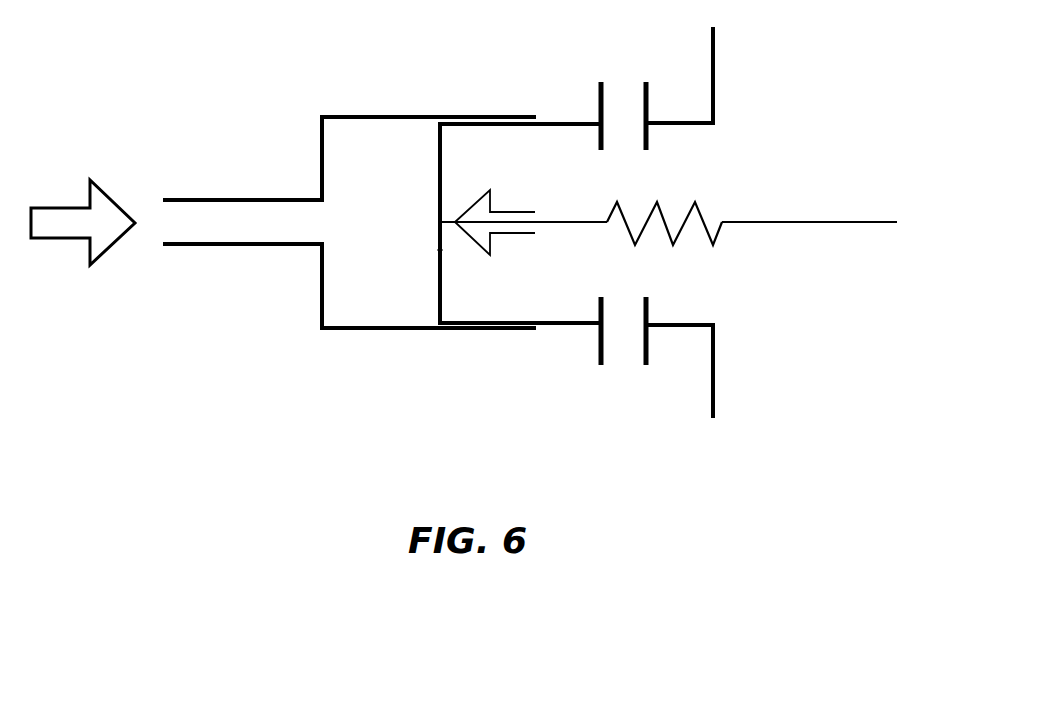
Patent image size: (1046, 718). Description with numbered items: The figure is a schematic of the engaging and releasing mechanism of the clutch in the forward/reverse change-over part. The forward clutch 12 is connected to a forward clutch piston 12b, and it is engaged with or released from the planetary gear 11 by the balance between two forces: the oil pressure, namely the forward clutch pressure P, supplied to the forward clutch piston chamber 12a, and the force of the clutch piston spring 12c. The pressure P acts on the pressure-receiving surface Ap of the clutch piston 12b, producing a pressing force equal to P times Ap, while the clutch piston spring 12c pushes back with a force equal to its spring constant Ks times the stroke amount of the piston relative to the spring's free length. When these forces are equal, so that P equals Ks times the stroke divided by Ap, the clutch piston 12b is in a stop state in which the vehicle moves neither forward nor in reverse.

The forward clutch pressure P is at (70, 208).
The forward clutch piston chamber 12a is at (333, 152).
The forward clutch piston 12b is at (558, 120).
The forward clutch 12 is at (597, 88).
The planetary gear 11 is at (645, 85).
The pressure-receiving surface Ap is at (442, 262).
The clutch piston spring 12c is at (805, 222).
The spring constant Ks is at (880, 222).